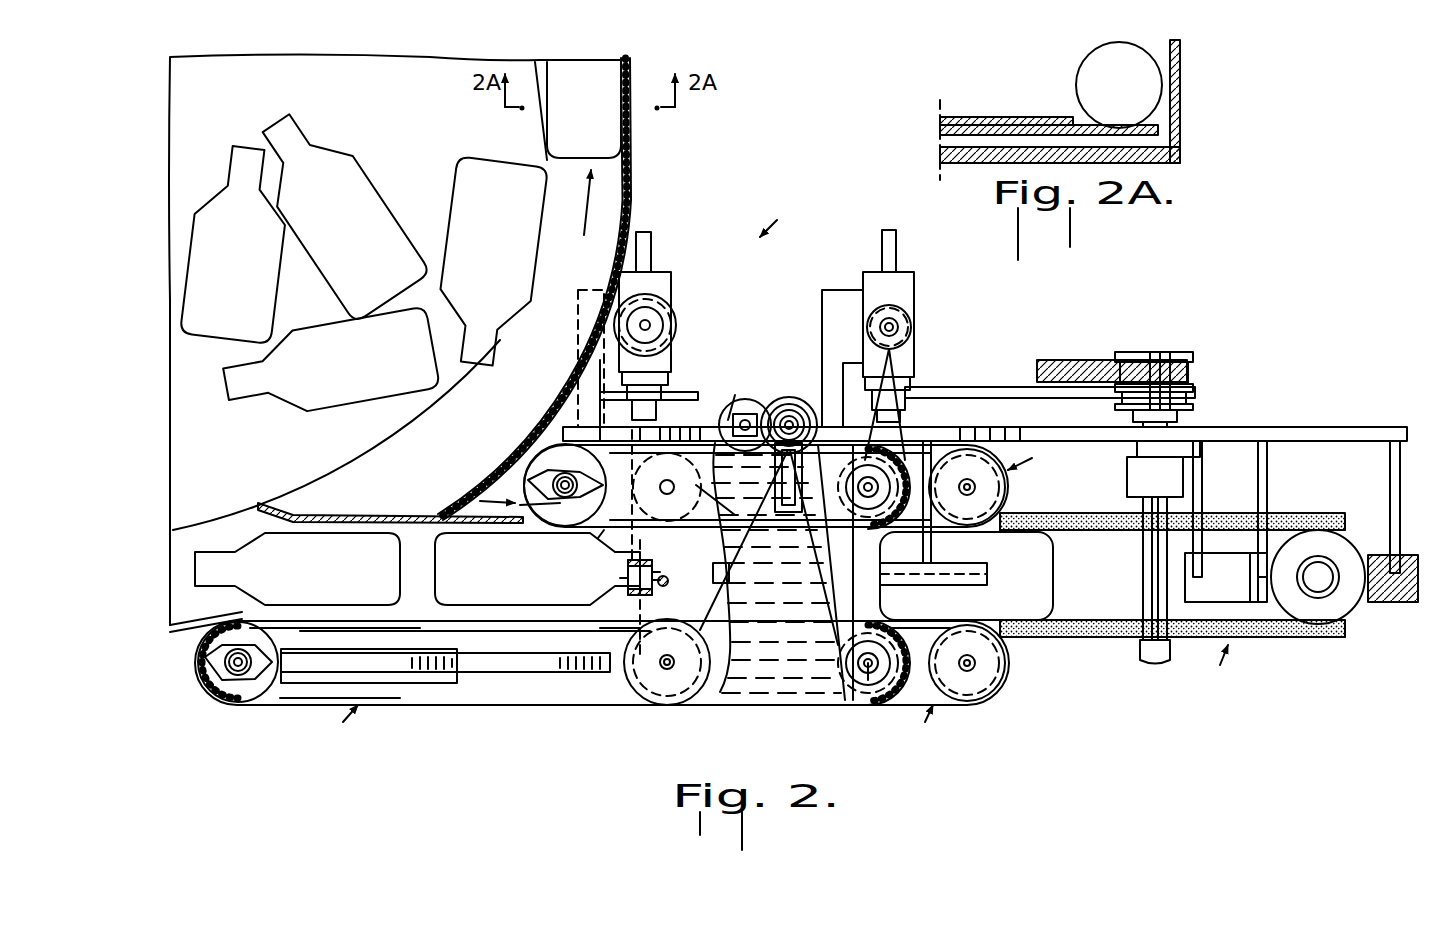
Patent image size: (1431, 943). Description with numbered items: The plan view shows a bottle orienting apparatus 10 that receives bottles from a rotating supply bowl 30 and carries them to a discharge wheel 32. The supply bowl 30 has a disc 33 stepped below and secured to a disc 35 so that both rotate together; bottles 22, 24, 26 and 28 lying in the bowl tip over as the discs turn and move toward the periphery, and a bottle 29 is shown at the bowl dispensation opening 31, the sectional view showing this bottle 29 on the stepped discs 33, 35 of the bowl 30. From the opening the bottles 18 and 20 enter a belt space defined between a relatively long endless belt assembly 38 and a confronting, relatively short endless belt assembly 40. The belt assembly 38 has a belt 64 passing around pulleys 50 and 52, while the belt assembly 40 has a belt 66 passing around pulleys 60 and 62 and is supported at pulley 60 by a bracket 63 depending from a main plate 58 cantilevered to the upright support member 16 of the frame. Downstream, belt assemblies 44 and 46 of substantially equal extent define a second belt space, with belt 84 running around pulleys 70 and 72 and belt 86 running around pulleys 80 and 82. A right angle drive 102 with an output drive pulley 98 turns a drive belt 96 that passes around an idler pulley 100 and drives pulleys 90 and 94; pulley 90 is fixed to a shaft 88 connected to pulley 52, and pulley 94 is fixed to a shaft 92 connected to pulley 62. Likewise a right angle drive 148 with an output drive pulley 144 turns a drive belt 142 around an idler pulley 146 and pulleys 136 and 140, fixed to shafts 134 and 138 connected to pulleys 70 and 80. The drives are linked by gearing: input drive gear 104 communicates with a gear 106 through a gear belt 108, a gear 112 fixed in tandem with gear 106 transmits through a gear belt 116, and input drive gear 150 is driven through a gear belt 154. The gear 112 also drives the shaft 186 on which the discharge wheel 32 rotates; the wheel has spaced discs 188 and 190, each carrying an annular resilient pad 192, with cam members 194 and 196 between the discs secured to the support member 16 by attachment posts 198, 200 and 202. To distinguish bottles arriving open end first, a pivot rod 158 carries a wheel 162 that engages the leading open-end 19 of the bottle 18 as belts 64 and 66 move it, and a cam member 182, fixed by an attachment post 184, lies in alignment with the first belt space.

In FIG. 2, the bottle orienting apparatus 10 is at (781, 214).
In FIG. 2, the upright support member 16 is at (723, 430).
In FIG. 2, the bottle 18 is at (530, 591).
In FIG. 2, the leading open-end 19 is at (655, 570).
In FIG. 2, the bottle 20 is at (340, 586).
In FIG. 2, the bottle 22 is at (371, 374).
In FIG. 2, the bottle 24 is at (512, 253).
In FIG. 2, the bottle 26 is at (365, 249).
In FIG. 2, the bottle 28 is at (246, 278).
In FIG. 2, the bottle 29 is at (560, 111).
In FIG. 2A, the bottle 29 is at (1148, 78).
In FIG. 2, the supply bowl 30 is at (634, 145).
In FIG. 2A, the supply bowl 30 is at (1182, 132).
In FIG. 2, the bowl dispensation opening 31 is at (415, 515).
In FIG. 2, the discharge wheel 32 is at (1214, 665).
In FIG. 2, the disc 33 is at (613, 182).
In FIG. 2A, the disc 33 is at (1162, 126).
In FIG. 2, the disc 35 is at (416, 97).
In FIG. 2A, the disc 35 is at (1050, 117).
In FIG. 2, the endless belt assembly 38 is at (602, 684).
In FIG. 2, the endless belt assembly 40 is at (725, 572).
In FIG. 2, the endless belt assembly 44 is at (926, 727).
In FIG. 2, the endless belt assembly 46 is at (1032, 460).
In FIG. 2, the pulley 50 is at (235, 698).
In FIG. 2, the pulley 52 is at (862, 690).
In FIG. 2, the main plate 58 is at (750, 695).
In FIG. 2, the pulley 60 is at (552, 475).
In FIG. 2, the pulley 62 is at (870, 510).
In FIG. 2, the bracket 63 is at (555, 450).
In FIG. 2, the belt 64 is at (640, 612).
In FIG. 2, the belt 66 is at (600, 540).
In FIG. 2, the pulley 70 is at (642, 690).
In FIG. 2, the pulley 72 is at (990, 683).
In FIG. 2, the pulley 80 is at (735, 568).
In FIG. 2, the pulley 82 is at (990, 492).
In FIG. 2, the belt 84 is at (985, 528).
In FIG. 2, the belt 86 is at (958, 630).
In FIG. 2, the shaft 88 is at (870, 672).
In FIG. 2, the pulley 90 is at (850, 688).
In FIG. 2, the shaft 92 is at (860, 505).
In FIG. 2, the pulley 94 is at (880, 470).
In FIG. 2, the drive belt 96 is at (769, 547).
In FIG. 2, the output drive pulley 98 is at (902, 318).
In FIG. 2, the idler pulley 100 is at (797, 388).
In FIG. 2, the right angle drive 102 is at (910, 272).
In FIG. 2, the input drive gear 104 is at (905, 385).
In FIG. 2, the gear 106 is at (1182, 412).
In FIG. 2, the gear belt 108 is at (1015, 388).
In FIG. 2, the gear 112 is at (1185, 365).
In FIG. 2, the gear belt 116 is at (1075, 362).
In FIG. 2, the shaft 134 is at (672, 668).
In FIG. 2, the pulley 136 is at (662, 683).
In FIG. 2, the shaft 138 is at (668, 495).
In FIG. 2, the pulley 140 is at (690, 500).
In FIG. 2, the drive belt 142 is at (647, 470).
In FIG. 2, the output drive pulley 144 is at (662, 305).
In FIG. 2, the idler pulley 146 is at (748, 410).
In FIG. 2, the right angle drive 148 is at (660, 272).
In FIG. 2, the input drive gear 150 is at (668, 378).
In FIG. 2, the gear belt 154 is at (728, 395).
In FIG. 2, the pivot rod 158 is at (683, 582).
In FIG. 2, the wheel 162 is at (618, 578).
In FIG. 2, the cam member 182 is at (920, 585).
In FIG. 2, the attachment post 184 is at (928, 550).
In FIG. 2, the shaft 186 is at (1170, 424).
In FIG. 2, the disc 188 is at (1310, 640).
In FIG. 2, the disc 190 is at (1345, 504).
In FIG. 2, the annular resilient pad 192 is at (1340, 526).
In FIG. 2, the cam member 194 is at (1240, 590).
In FIG. 2, the cam member 196 is at (1397, 602).
In FIG. 2, the attachment post 198 is at (1203, 482).
In FIG. 2, the attachment post 200 is at (1267, 475).
In FIG. 2, the attachment post 202 is at (1390, 474).